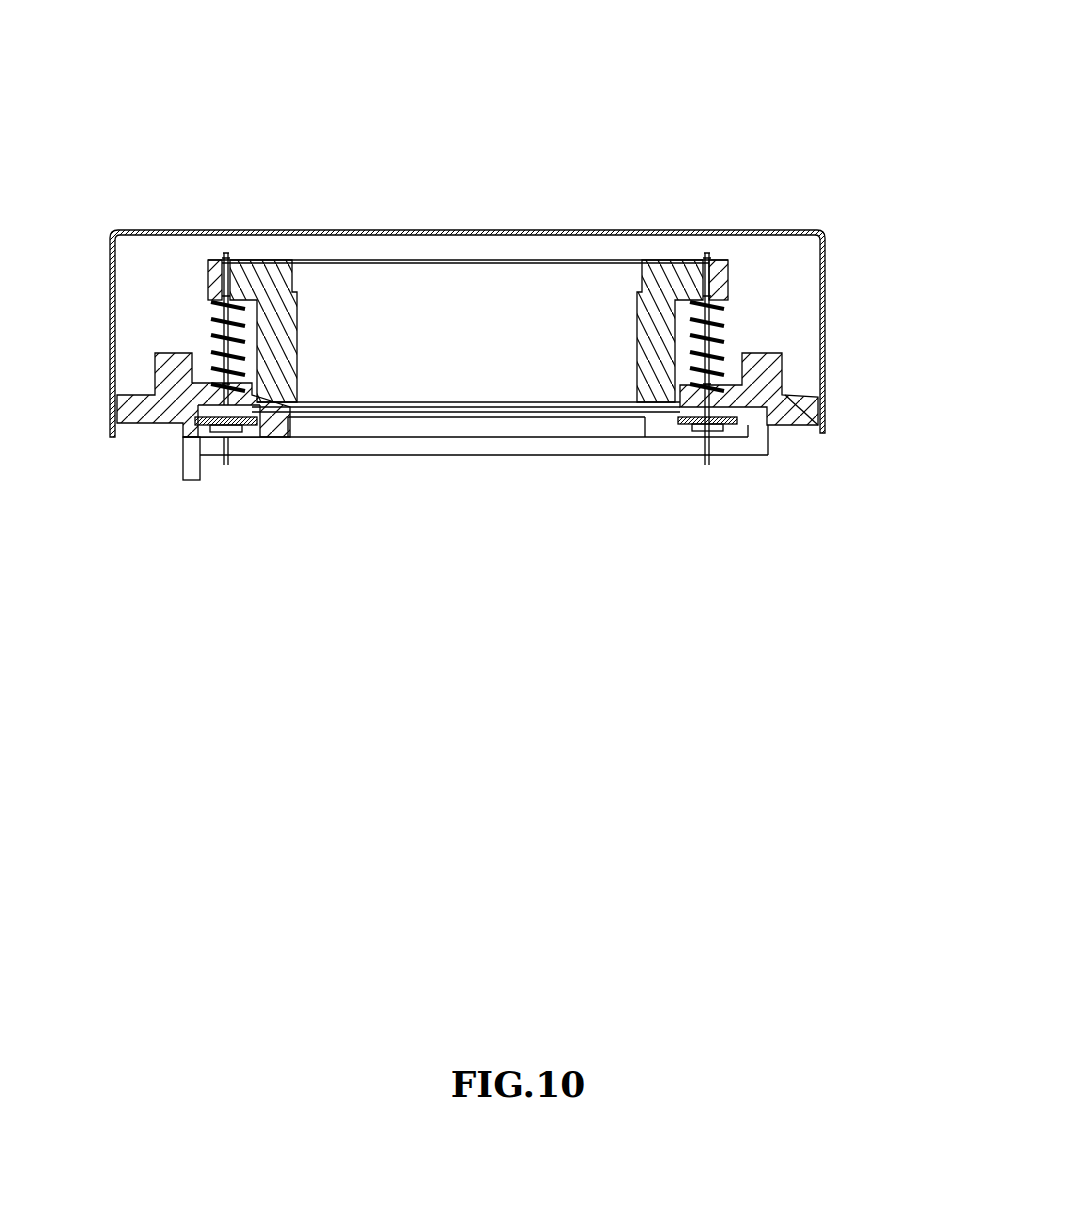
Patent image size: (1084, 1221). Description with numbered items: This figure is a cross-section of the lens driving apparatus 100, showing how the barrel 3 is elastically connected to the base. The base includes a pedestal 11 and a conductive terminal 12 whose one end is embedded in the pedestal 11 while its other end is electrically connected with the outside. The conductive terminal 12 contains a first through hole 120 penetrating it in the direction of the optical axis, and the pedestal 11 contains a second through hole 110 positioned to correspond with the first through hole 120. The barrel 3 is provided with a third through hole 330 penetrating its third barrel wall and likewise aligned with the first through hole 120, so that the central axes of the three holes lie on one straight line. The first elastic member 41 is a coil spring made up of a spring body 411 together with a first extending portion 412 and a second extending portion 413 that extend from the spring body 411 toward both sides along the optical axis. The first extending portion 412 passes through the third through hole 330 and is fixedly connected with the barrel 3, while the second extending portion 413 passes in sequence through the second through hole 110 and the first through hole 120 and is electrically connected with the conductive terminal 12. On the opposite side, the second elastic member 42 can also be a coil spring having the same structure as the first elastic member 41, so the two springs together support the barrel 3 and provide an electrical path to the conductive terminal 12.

The camera module 100 is at (471, 43).
The barrel 3 is at (278, 262).
The third through hole 330 is at (221, 257).
The second elastic member 42 is at (213, 331).
The first extending portion 412 is at (709, 274).
The spring body 411 is at (723, 337).
The second extending portion 413 is at (712, 412).
The first elastic member 41 is at (918, 257).
The pedestal 11 is at (176, 393).
The first through hole 120 is at (222, 422).
The conductive terminal 12 is at (229, 398).
The second through hole 110 is at (243, 396).